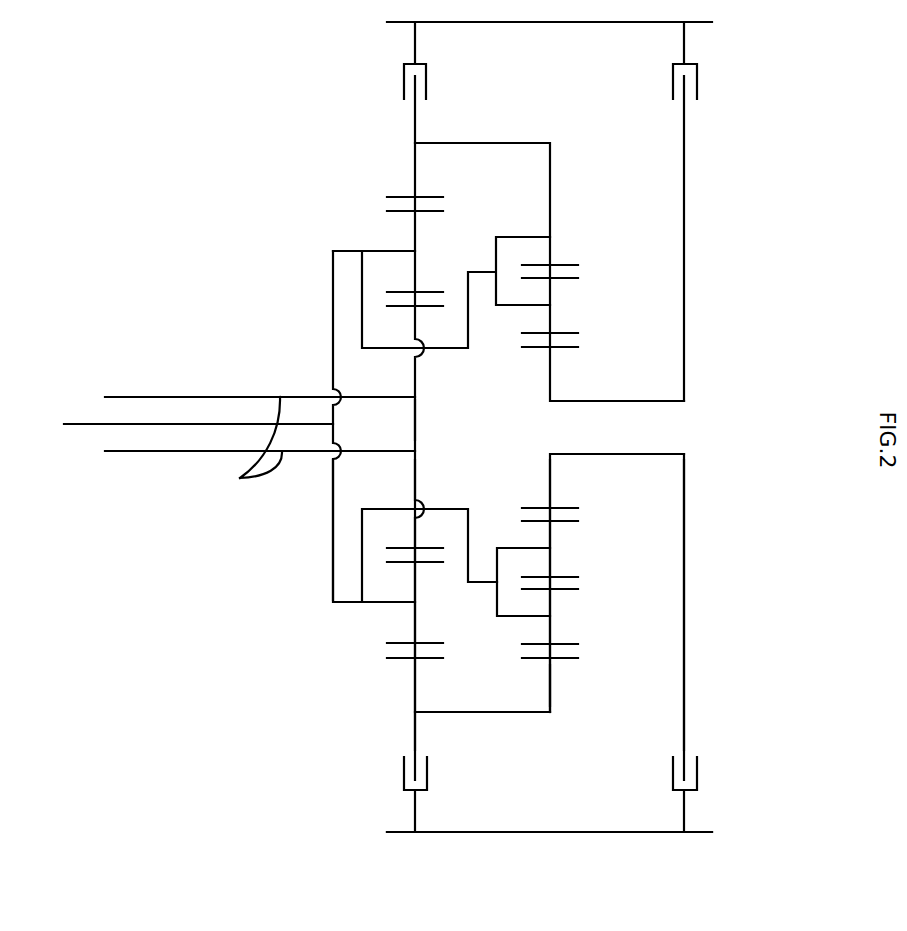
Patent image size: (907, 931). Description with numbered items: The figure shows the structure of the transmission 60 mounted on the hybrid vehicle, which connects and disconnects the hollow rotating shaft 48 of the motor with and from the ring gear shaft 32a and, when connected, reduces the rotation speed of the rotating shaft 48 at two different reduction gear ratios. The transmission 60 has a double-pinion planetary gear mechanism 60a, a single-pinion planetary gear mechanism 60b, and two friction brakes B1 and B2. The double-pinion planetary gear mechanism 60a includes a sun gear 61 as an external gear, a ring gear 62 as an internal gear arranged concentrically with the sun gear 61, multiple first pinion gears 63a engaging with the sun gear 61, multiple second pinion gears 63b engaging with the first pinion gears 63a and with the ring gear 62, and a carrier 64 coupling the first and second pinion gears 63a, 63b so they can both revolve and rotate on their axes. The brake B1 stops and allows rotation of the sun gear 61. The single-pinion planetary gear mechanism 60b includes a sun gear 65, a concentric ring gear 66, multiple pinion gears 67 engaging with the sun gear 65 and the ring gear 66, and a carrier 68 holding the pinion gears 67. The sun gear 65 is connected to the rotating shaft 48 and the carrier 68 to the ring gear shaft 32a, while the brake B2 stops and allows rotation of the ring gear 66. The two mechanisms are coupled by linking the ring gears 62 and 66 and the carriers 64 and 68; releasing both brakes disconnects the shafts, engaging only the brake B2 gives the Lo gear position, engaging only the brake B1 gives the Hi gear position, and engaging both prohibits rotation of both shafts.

The ring gear shaft 32a is at (195, 423).
The rotating shaft 48 is at (241, 443).
The sun gear 65 is at (415, 483).
The carrier 68 is at (333, 572).
The carrier 64 is at (513, 616).
The pinion gears 67 is at (415, 614).
The ring gear 66 is at (415, 680).
The sun gear 61 is at (550, 480).
The first pinion gears 63a is at (550, 560).
The second pinion gears 63b is at (550, 627).
The ring gear 62 is at (550, 678).
The brake B1 is at (697, 782).
The brake B2 is at (405, 772).
The double-pinion planetary gear mechanism 60a is at (583, 738).
The single-pinion planetary gear mechanism 60b is at (287, 690).
The transmission 60 is at (513, 864).